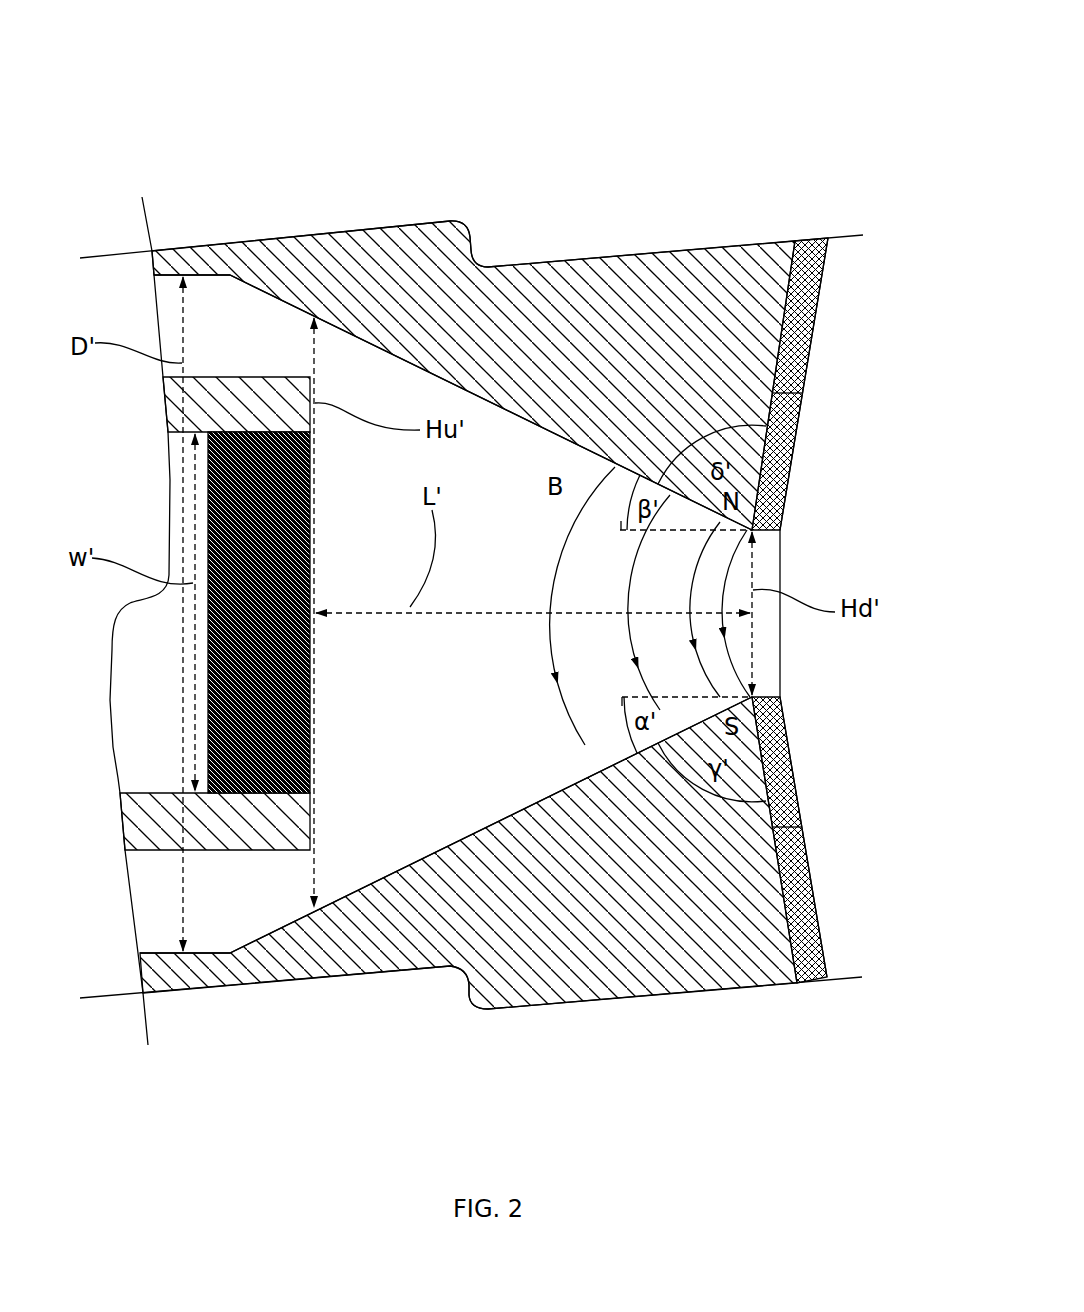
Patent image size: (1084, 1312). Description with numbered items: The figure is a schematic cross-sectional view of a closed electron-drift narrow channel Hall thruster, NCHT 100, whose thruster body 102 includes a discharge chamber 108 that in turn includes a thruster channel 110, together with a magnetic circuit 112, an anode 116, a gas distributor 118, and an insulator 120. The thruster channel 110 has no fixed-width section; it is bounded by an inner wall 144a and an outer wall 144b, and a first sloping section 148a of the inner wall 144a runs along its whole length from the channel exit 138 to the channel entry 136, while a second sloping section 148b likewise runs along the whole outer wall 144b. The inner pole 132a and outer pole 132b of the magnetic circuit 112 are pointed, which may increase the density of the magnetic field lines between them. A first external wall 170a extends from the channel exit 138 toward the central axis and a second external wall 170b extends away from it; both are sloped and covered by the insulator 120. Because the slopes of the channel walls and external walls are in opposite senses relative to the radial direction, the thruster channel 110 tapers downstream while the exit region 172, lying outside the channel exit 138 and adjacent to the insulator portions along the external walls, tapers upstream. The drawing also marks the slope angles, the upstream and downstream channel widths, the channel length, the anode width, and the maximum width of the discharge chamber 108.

The closed electron-drift NCHT 100 is at (192, 87).
The thruster body 102 is at (148, 163).
The discharge chamber 108 is at (261, 348).
The thruster channel 110 is at (597, 573).
The magnetic circuit 112 is at (543, 245).
The anode 116 is at (318, 597).
The gas distributor 118 is at (210, 887).
The insulator 120 is at (797, 447).
The inner pole 132a is at (692, 834).
The outer pole 132b is at (692, 397).
The channel entry 136 is at (320, 647).
The channel exit 138 is at (762, 650).
The inner wall 144a is at (516, 800).
The outer wall 144b is at (517, 432).
The first sloping section 148a is at (428, 846).
The second sloping section 148b is at (428, 380).
The first external wall 170a is at (802, 828).
The second external wall 170b is at (800, 388).
The exit region 172 is at (813, 500).